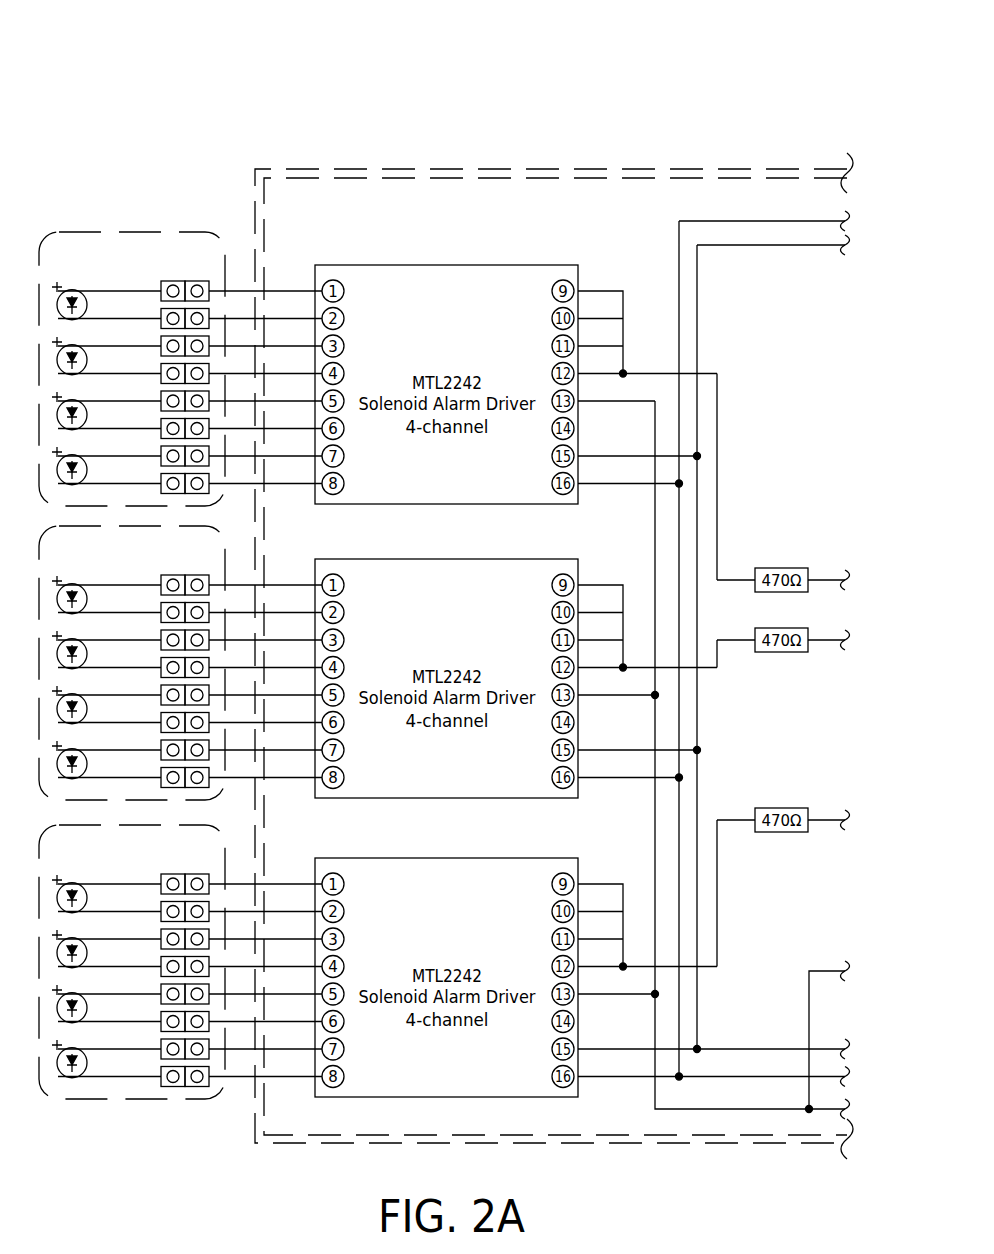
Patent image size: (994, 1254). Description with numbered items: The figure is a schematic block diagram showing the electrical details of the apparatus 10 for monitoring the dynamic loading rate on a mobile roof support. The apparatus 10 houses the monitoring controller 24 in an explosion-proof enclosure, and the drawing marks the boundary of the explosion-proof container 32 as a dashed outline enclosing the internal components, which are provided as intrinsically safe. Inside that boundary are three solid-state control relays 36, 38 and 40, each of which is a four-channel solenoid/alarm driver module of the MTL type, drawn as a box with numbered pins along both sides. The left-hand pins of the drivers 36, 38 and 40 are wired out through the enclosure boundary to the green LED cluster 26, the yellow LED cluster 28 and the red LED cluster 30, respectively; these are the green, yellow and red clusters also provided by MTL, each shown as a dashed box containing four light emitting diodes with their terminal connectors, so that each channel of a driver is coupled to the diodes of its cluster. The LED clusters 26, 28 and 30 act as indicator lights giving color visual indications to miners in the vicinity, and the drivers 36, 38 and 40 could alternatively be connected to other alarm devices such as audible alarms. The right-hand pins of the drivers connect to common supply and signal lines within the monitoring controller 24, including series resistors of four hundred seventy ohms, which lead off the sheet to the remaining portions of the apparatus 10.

The apparatus 10 is at (376, 123).
The monitoring controller 24 is at (607, 234).
The green LED cluster 26 is at (77, 224).
The yellow LED cluster 28 is at (40, 552).
The red LED cluster 30 is at (40, 851).
The explosion-proof container 32 is at (563, 169).
The solid-state control relay 36 is at (457, 352).
The solid-state control relay 38 is at (457, 646).
The solid-state control relay 40 is at (457, 945).